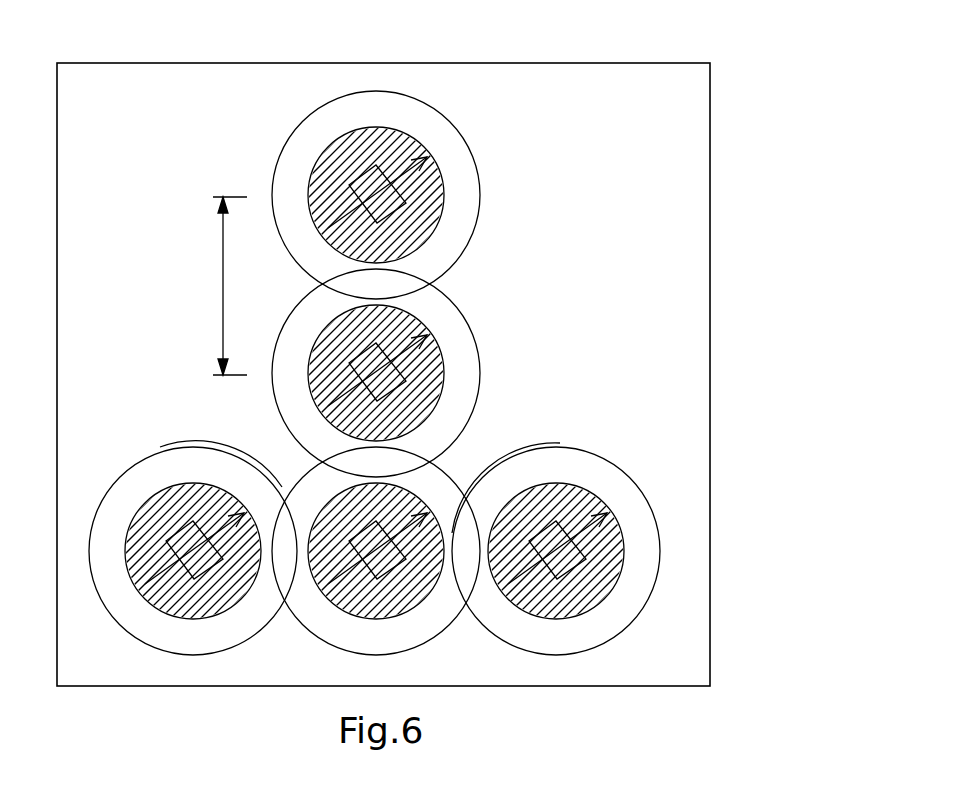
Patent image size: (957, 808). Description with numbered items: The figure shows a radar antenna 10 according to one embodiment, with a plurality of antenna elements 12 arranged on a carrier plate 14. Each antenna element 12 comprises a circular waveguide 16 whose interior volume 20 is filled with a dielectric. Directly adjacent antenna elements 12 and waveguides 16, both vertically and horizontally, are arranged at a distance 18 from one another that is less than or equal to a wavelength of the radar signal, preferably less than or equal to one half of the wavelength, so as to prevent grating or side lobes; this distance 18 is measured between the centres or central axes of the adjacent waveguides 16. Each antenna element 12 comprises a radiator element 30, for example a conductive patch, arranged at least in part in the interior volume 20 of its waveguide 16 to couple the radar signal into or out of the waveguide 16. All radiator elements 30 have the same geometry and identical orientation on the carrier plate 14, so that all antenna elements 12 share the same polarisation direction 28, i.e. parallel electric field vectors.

The radar antenna 10 is at (735, 90).
The antenna element 12 is at (484, 140).
The carrier plate 14 is at (678, 272).
The waveguide 16 is at (468, 190).
The distance 18 is at (223, 272).
The interior volume 20 is at (360, 128).
The polarisation direction 28 is at (557, 540).
The radiator element 30 is at (390, 215).